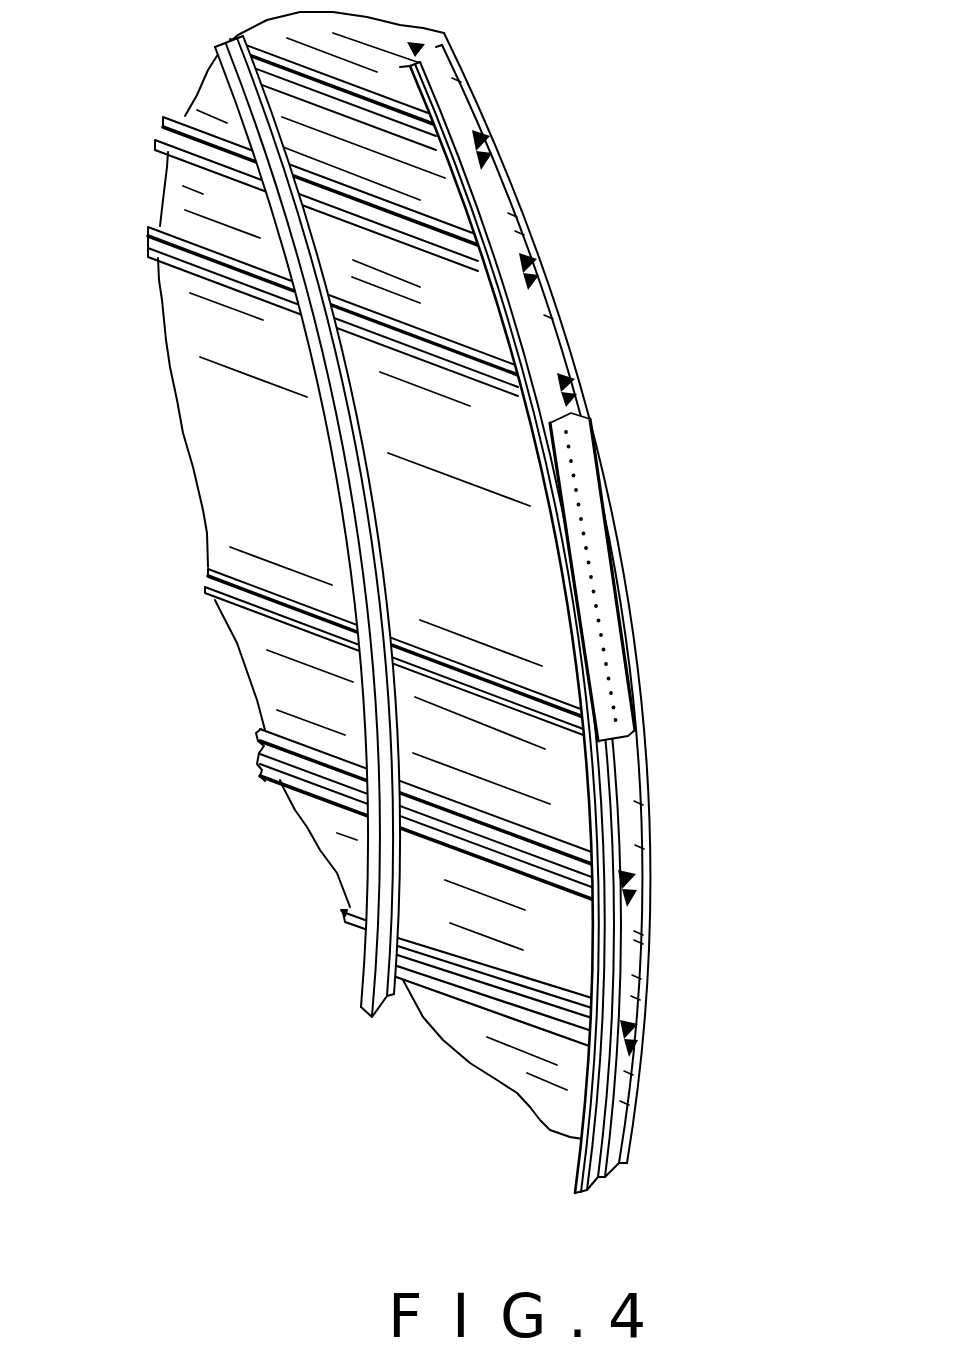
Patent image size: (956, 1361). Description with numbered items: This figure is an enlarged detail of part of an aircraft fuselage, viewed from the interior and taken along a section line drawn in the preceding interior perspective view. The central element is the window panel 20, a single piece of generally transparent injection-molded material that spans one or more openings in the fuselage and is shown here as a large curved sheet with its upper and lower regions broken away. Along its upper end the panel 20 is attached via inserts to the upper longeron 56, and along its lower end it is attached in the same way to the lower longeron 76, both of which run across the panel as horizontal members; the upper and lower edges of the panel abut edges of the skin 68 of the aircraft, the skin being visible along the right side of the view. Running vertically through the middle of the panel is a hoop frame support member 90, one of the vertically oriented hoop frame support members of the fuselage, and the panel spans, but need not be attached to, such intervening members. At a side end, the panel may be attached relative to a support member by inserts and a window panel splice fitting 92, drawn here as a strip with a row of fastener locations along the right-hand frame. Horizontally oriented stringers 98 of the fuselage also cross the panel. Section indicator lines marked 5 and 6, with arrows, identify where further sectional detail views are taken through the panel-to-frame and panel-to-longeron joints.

The window panel 20 is at (461, 450).
The upper longeron 56 is at (163, 222).
The skin 68 is at (642, 997).
The lower longeron 76 is at (205, 600).
The hoop frame support member 90 is at (190, 95).
The window panel splice fitting 92 is at (610, 490).
The stringer 98 is at (280, 785).
The section line 5 is at (718, 650).
The section line 6 is at (290, 421).